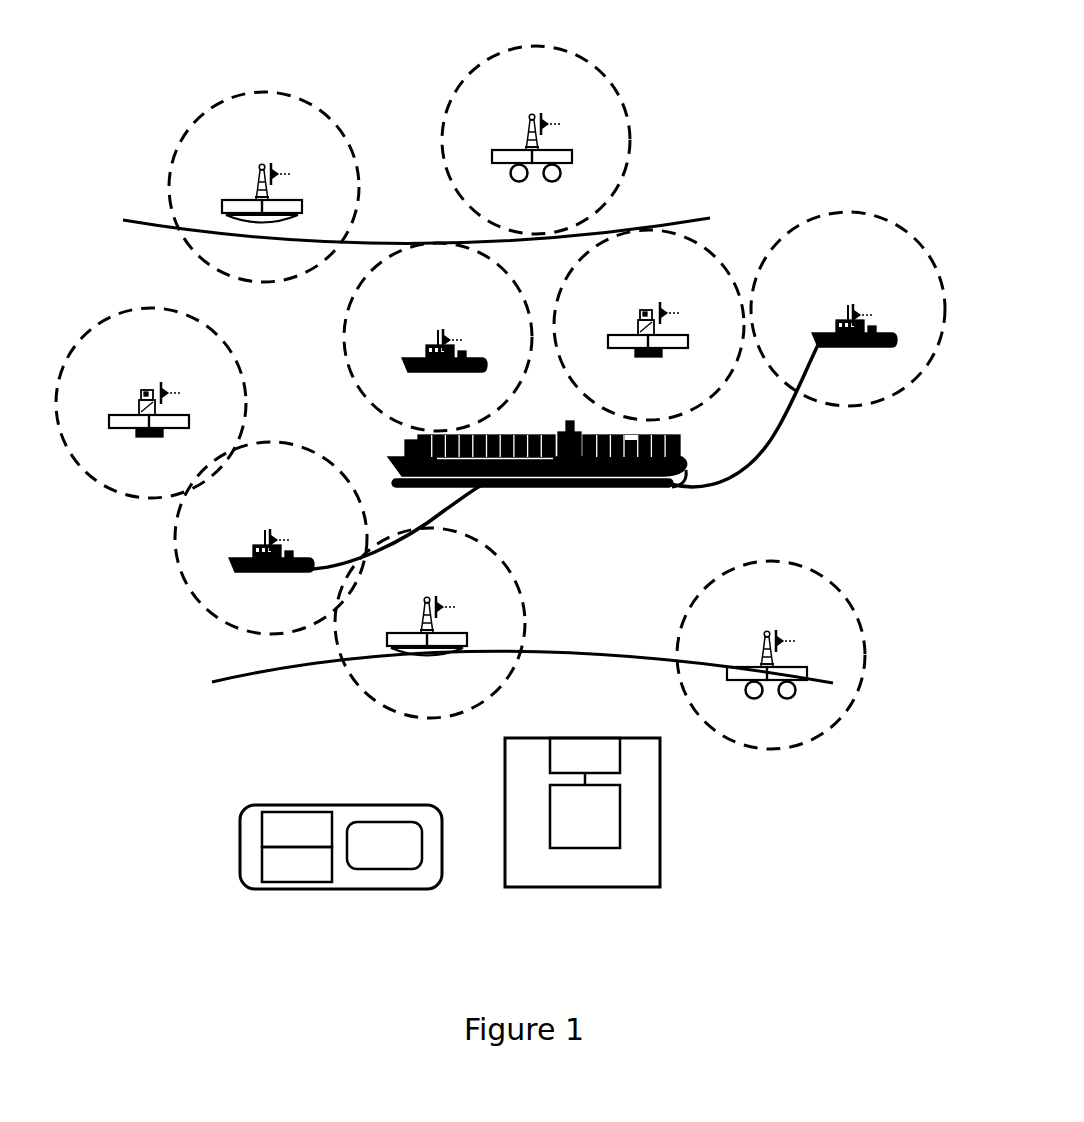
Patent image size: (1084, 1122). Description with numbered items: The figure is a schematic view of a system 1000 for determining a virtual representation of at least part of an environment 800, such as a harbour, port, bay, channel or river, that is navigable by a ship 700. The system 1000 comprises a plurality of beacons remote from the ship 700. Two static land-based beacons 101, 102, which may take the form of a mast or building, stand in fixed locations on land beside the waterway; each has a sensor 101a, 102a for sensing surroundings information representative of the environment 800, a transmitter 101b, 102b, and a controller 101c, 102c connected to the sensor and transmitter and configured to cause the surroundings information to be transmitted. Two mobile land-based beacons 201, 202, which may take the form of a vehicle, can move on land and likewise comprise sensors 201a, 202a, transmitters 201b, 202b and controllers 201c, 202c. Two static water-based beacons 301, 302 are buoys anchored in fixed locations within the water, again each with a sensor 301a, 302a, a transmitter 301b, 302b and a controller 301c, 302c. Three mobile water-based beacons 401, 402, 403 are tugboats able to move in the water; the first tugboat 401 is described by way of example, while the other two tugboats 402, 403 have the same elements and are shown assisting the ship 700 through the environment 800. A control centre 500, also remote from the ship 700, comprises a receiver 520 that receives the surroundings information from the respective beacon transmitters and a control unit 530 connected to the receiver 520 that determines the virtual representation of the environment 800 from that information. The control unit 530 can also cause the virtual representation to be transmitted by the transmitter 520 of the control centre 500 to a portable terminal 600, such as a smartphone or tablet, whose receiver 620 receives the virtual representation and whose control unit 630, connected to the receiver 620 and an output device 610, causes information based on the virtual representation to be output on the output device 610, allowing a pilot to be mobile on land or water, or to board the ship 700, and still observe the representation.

The system 1000 is at (712, 86).
The environment 800 is at (758, 191).
The static land-based beacon 101 is at (264, 187).
The sensor 101a is at (219, 188).
The transmitter 101b is at (306, 156).
The controller 101c is at (309, 188).
The static land-based beacon 102 is at (430, 623).
The sensor 102a is at (384, 621).
The transmitter 102b is at (471, 589).
The controller 102c is at (474, 621).
The mobile land-based beacon 201 is at (536, 140).
The sensor 201a is at (489, 138).
The transmitter 201b is at (576, 106).
The controller 201c is at (579, 138).
The mobile land-based beacon 202 is at (771, 655).
The sensor 202a is at (724, 655).
The transmitter 202b is at (811, 623).
The controller 202c is at (814, 655).
The static water-based beacon 301 is at (151, 403).
The sensor 301a is at (106, 403).
The transmitter 301b is at (195, 374).
The controller 301c is at (196, 403).
The static water-based beacon 302 is at (649, 325).
The sensor 302a is at (605, 323).
The transmitter 302b is at (694, 295).
The controller 302c is at (695, 323).
The mobile water-based beacon 401 is at (438, 337).
The mobile water-based beacon 402 is at (271, 538).
The mobile water-based beacon 403 is at (848, 309).
The ship 700 is at (549, 503).
The control centre 500 is at (605, 845).
The receiver 520 is at (604, 770).
The control unit 530 is at (604, 830).
The portable terminal 600 is at (341, 878).
The output device 610 is at (404, 856).
The receiver 620 is at (316, 842).
The control unit 630 is at (316, 875).